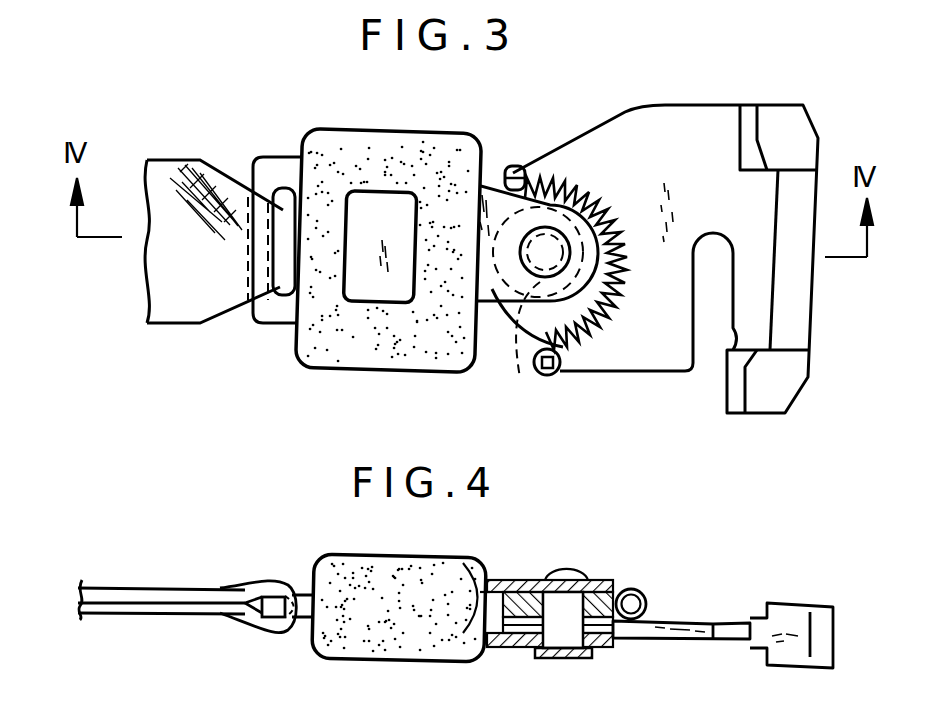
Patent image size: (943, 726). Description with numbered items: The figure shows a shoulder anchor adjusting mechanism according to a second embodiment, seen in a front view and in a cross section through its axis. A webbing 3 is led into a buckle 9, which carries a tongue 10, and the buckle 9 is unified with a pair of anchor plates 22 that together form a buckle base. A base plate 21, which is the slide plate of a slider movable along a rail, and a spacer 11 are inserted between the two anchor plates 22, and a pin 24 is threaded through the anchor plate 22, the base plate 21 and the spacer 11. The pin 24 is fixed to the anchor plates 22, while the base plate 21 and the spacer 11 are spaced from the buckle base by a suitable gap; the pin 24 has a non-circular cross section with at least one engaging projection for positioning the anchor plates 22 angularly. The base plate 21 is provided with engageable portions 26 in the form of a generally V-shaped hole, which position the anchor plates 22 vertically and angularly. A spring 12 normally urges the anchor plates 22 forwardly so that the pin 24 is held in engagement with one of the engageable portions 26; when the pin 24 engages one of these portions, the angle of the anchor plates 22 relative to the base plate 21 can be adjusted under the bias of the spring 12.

In FIG. 3, the webbing 3 is at (176, 316).
In FIG. 3, the buckle 9 is at (424, 142).
In FIG. 4, the buckle 9 is at (399, 608).
In FIG. 3, the tongue 10 is at (273, 168).
In FIG. 4, the tongue 10 is at (288, 606).
In FIG. 4, the spacer 11 is at (513, 583).
In FIG. 3, the spring 12 is at (598, 327).
In FIG. 3, the base plate 21 is at (665, 137).
In FIG. 4, the base plate 21 is at (698, 640).
In FIG. 3, the anchor plates 22 is at (484, 290).
In FIG. 4, the anchor plates 22 is at (476, 574).
In FIG. 3, the pin 24 is at (552, 227).
In FIG. 4, the pin 24 is at (565, 636).
In FIG. 3, the engageable portions 26 is at (538, 372).
In FIG. 4, the engageable portions 26 is at (631, 604).